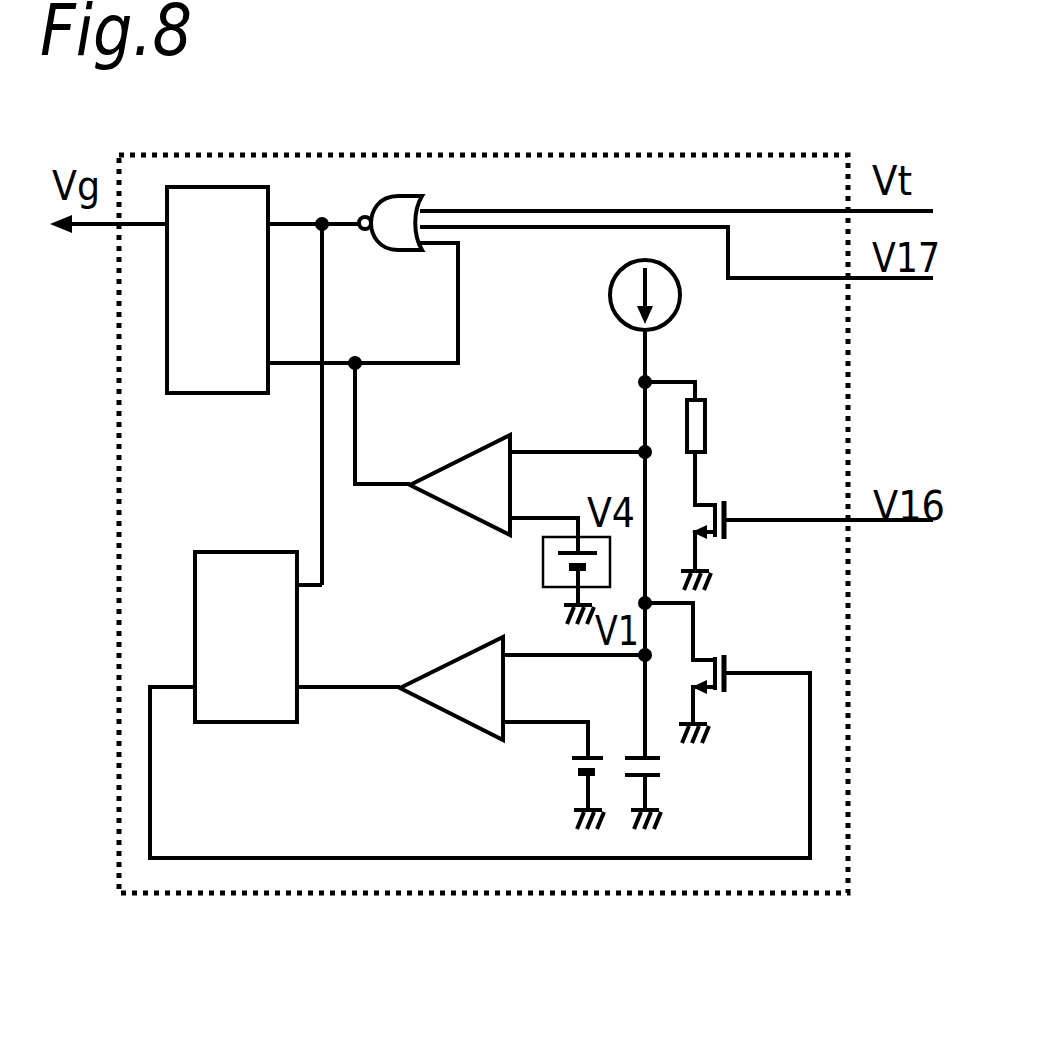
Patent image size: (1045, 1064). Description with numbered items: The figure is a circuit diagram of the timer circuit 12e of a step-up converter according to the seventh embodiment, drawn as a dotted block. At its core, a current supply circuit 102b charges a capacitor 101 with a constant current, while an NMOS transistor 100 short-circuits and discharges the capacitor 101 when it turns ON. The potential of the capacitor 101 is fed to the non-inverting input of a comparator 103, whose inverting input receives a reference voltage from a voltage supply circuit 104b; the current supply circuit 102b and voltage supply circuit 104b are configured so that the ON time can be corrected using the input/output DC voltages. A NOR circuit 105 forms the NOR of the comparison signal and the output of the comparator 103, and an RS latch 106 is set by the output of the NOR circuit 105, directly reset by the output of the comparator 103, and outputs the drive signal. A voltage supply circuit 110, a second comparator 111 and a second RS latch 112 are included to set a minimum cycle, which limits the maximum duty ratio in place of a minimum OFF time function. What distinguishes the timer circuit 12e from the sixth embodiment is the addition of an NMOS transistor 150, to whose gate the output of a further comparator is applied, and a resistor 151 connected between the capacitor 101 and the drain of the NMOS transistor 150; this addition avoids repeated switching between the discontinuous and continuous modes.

The timer circuit 12e is at (295, 895).
The RS latch 106 is at (213, 393).
The NOR circuit 105 is at (402, 252).
The current supply circuit 102b is at (610, 303).
The resistor 151 is at (703, 402).
The NMOS transistor 150 is at (717, 505).
The NMOS transistor 100 is at (718, 655).
The comparator 103 is at (452, 510).
The voltage supply circuit 104b is at (543, 543).
The comparator 111 is at (435, 708).
The RS latch 112 is at (228, 722).
The voltage supply circuit 110 is at (565, 767).
The capacitor 101 is at (665, 767).